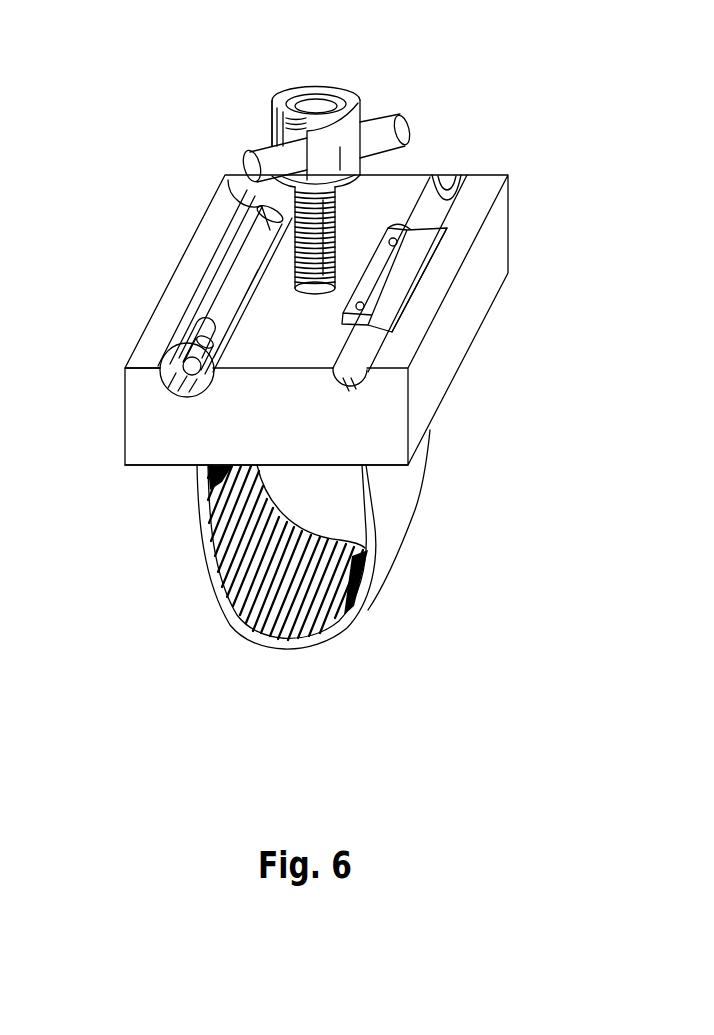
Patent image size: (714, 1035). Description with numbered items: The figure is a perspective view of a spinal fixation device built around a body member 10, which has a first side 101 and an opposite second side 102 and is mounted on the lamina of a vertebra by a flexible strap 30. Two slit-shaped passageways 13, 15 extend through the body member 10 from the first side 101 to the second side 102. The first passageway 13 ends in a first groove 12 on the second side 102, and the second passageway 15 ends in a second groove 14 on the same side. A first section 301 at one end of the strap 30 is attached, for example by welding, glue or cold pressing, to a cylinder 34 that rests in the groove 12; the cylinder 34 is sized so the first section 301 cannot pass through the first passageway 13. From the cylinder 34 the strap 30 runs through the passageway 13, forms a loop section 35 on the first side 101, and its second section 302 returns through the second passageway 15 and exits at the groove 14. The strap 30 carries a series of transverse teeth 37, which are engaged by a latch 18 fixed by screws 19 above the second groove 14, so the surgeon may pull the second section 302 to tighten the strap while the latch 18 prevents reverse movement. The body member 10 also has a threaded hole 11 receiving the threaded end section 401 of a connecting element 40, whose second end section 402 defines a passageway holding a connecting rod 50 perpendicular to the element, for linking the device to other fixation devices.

The body member 10 is at (448, 340).
The connecting means 11 is at (223, 290).
The first groove 12 is at (187, 396).
The first passageway 13 is at (183, 338).
The second groove 14 is at (356, 380).
The second passageway 15 is at (440, 193).
The latch 18 is at (375, 278).
The screws 19 is at (389, 241).
The strap 30 is at (372, 612).
The cylinder 34 is at (252, 183).
The loop section 35 is at (388, 546).
The teeth 37 is at (229, 597).
The connecting element 40 is at (351, 96).
The connecting rod 50 is at (404, 128).
The first side 101 is at (152, 466).
The second side 102 is at (142, 365).
The first section 301 is at (203, 280).
The second section 302 is at (398, 293).
The threaded end section 401 is at (264, 203).
The second end section 402 is at (270, 130).